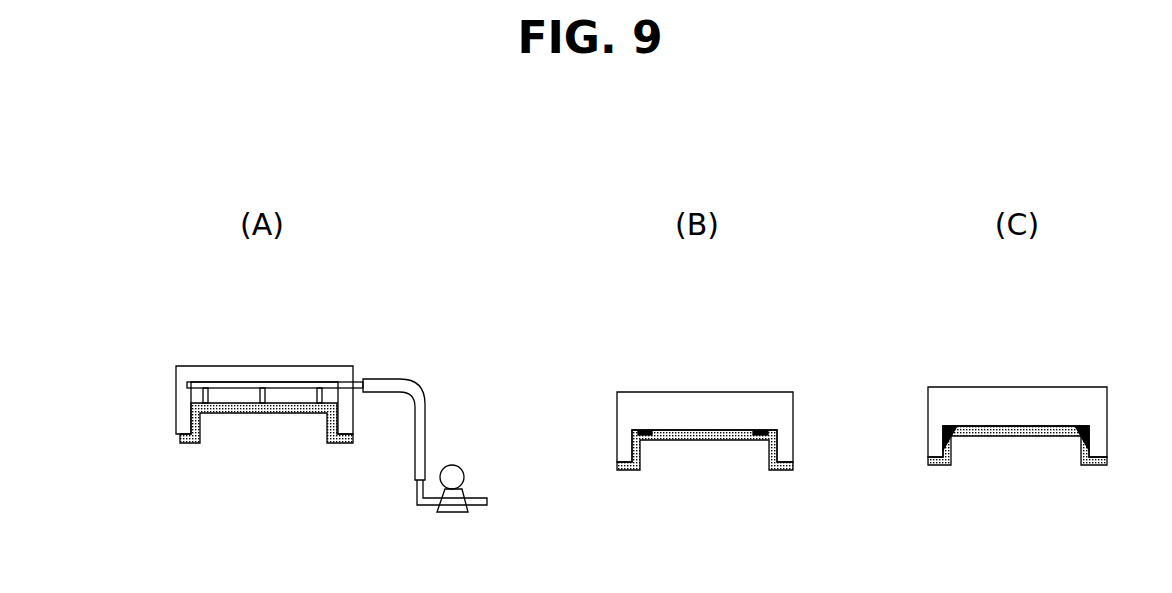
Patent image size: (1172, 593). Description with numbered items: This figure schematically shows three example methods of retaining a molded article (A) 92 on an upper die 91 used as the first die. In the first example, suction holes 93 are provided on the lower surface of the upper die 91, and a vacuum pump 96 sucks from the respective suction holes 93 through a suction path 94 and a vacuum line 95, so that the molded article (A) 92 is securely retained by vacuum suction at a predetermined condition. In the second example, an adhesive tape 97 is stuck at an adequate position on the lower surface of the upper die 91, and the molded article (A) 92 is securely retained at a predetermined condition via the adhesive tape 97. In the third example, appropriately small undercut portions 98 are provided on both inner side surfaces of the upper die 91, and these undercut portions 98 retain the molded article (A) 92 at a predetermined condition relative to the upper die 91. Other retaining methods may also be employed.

The upper die 91 is at (324, 372).
The molded article (A) 92 is at (191, 421).
The suction holes 93 is at (203, 390).
The suction path 94 is at (241, 387).
The vacuum line 95 is at (420, 392).
The vacuum pump 96 is at (453, 513).
The adhesive tape 97 is at (648, 430).
The undercut portions 98 is at (1089, 450).